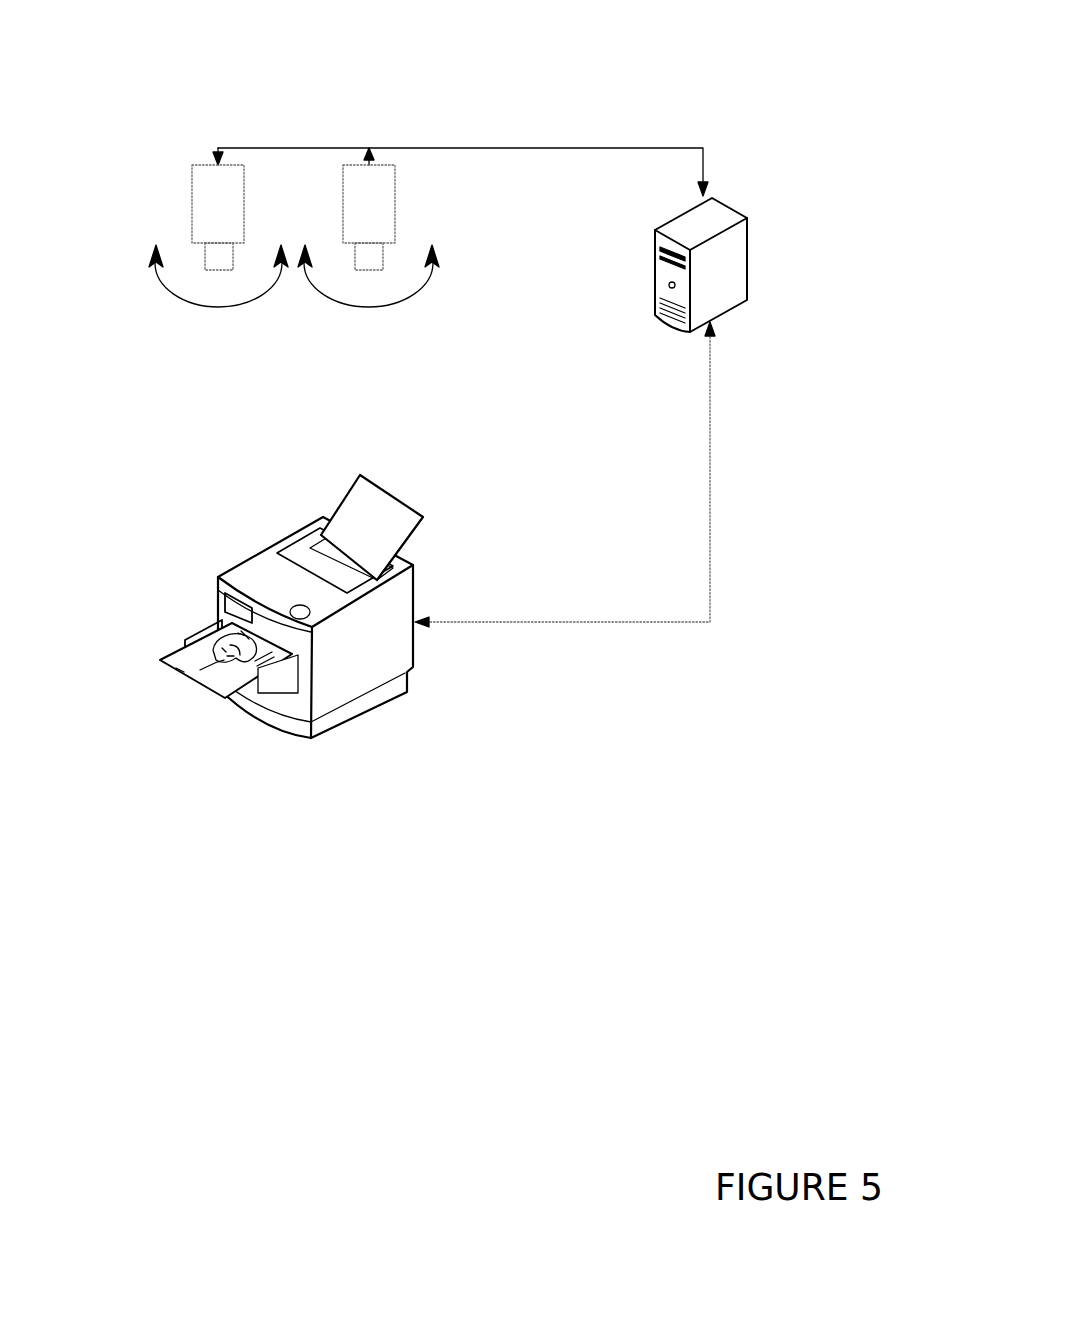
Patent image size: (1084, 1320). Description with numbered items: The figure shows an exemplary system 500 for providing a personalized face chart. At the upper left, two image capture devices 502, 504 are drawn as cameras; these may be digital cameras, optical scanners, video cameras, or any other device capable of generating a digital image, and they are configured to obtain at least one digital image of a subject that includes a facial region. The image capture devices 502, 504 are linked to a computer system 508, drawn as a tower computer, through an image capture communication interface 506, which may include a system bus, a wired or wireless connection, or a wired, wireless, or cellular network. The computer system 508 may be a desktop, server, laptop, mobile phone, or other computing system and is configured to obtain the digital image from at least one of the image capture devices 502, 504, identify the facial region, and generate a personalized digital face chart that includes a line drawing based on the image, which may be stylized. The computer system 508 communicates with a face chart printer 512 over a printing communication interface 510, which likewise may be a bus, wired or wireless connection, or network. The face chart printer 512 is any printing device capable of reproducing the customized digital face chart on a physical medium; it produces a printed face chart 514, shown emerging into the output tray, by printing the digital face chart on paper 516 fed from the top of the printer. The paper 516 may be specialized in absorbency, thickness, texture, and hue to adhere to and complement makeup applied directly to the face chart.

The system 500 is at (790, 116).
The image capture device 502 is at (222, 190).
The image capture device 504 is at (365, 190).
The image capture communication interface 506 is at (580, 148).
The computer system 508 is at (732, 273).
The printing communication interface 510 is at (710, 522).
The face chart printer 512 is at (358, 697).
The printed face chart 514 is at (222, 697).
The paper 516 is at (400, 537).